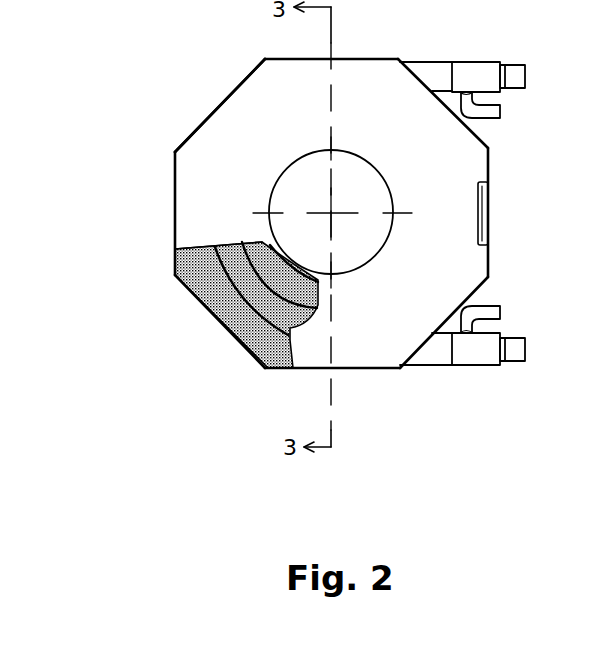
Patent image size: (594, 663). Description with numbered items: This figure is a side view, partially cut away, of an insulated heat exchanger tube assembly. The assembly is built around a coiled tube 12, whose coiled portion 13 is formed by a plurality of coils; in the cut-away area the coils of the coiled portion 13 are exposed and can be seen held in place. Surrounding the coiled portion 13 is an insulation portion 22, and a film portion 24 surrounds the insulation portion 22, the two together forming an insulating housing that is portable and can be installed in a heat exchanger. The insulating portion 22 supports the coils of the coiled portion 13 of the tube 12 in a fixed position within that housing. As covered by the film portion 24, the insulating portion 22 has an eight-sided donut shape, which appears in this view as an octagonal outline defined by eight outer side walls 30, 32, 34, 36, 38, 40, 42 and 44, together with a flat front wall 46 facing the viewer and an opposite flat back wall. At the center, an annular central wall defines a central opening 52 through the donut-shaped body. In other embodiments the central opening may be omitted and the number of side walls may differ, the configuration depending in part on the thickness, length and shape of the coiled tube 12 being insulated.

The coiled tube 12 is at (195, 285).
The coiled portion 13 is at (243, 342).
The insulation portion 22 is at (175, 265).
The film portion 24 is at (322, 350).
The outer side wall 30 is at (492, 163).
The outer side wall 32 is at (483, 135).
The outer side wall 34 is at (360, 57).
The outer side wall 36 is at (218, 107).
The outer side wall 38 is at (175, 212).
The outer side wall 40 is at (220, 327).
The outer side wall 42 is at (365, 375).
The outer side wall 44 is at (468, 295).
The flat front wall 46 is at (402, 315).
The central opening 52 is at (303, 193).